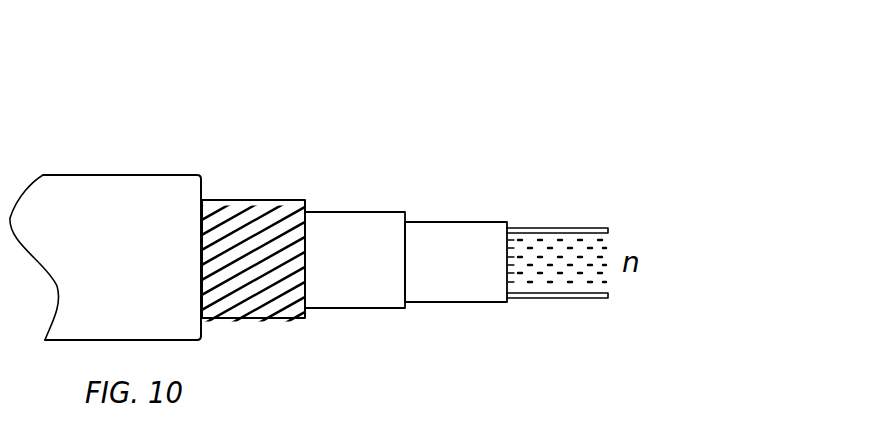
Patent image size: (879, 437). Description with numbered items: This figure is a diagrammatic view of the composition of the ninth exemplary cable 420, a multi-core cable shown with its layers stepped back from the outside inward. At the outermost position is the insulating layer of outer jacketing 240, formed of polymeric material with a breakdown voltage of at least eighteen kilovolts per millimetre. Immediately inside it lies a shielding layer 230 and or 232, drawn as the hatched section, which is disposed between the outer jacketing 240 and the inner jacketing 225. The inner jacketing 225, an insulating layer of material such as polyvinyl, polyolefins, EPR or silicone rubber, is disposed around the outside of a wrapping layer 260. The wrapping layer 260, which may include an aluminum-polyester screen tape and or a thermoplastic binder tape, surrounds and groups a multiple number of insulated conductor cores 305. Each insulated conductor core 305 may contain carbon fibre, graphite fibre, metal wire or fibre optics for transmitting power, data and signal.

The ninth exemplary cable 420 is at (416, 118).
The outer jacketing 240 is at (73, 175).
The shielding layer 230 is at (230, 203).
The shielding layer 232 is at (284, 238).
The inner jacketing 225 is at (347, 210).
The wrapping layer 260 is at (440, 220).
The insulated conductor core 305 is at (537, 227).